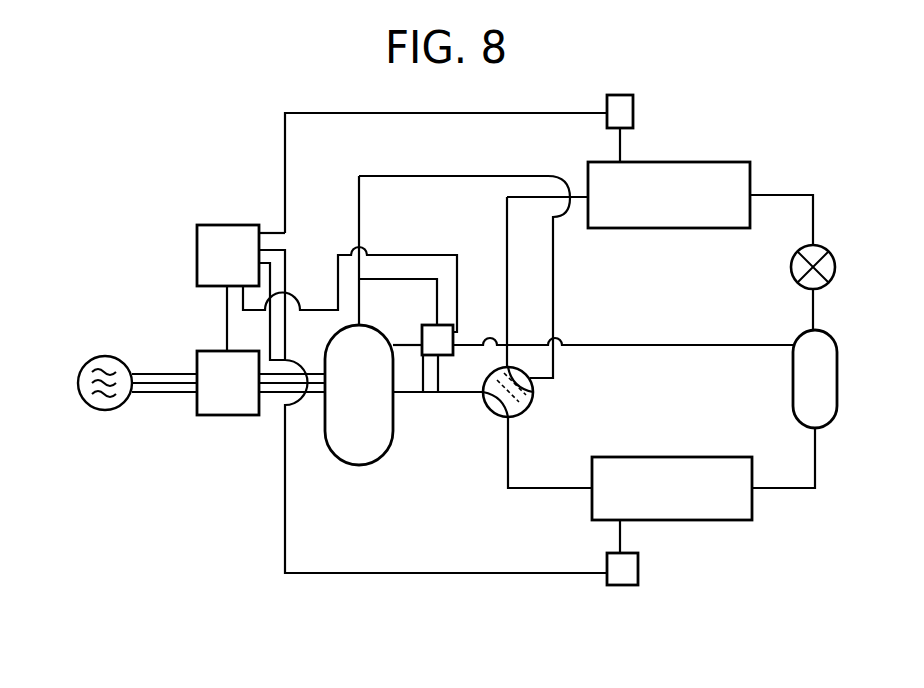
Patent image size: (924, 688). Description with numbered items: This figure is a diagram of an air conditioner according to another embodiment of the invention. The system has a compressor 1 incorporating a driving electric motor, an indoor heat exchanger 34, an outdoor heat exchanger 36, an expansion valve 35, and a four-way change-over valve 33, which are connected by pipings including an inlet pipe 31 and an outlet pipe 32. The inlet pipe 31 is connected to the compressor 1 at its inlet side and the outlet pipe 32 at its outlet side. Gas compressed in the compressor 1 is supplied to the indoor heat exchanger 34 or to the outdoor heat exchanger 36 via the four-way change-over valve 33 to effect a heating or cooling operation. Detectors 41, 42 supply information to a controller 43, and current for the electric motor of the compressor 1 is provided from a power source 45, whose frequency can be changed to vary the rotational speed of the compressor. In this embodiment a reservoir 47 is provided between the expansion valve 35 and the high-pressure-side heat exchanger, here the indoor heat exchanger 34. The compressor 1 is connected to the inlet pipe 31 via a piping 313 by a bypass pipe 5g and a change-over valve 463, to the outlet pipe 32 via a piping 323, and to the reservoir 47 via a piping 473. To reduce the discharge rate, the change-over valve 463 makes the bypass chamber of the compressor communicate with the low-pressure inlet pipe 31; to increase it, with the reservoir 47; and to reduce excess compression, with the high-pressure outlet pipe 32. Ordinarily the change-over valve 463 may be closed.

The compressor 1 is at (359, 465).
The bypass pipe 5g is at (400, 343).
The inlet pipe 31 is at (440, 176).
The piping 313 is at (408, 279).
The outlet pipe 32 is at (432, 395).
The piping 323 is at (427, 395).
The change-over valve 463 is at (423, 392).
The four-way change-over valve 33 is at (531, 402).
The indoor heat exchanger 34 is at (705, 520).
The expansion valve 35 is at (830, 284).
The outdoor heat exchanger 36 is at (727, 162).
The detector 41 is at (633, 110).
The detector 42 is at (622, 585).
The controller 43 is at (197, 263).
The power source 45 is at (105, 410).
The reservoir 47 is at (837, 372).
The piping 473 is at (680, 345).